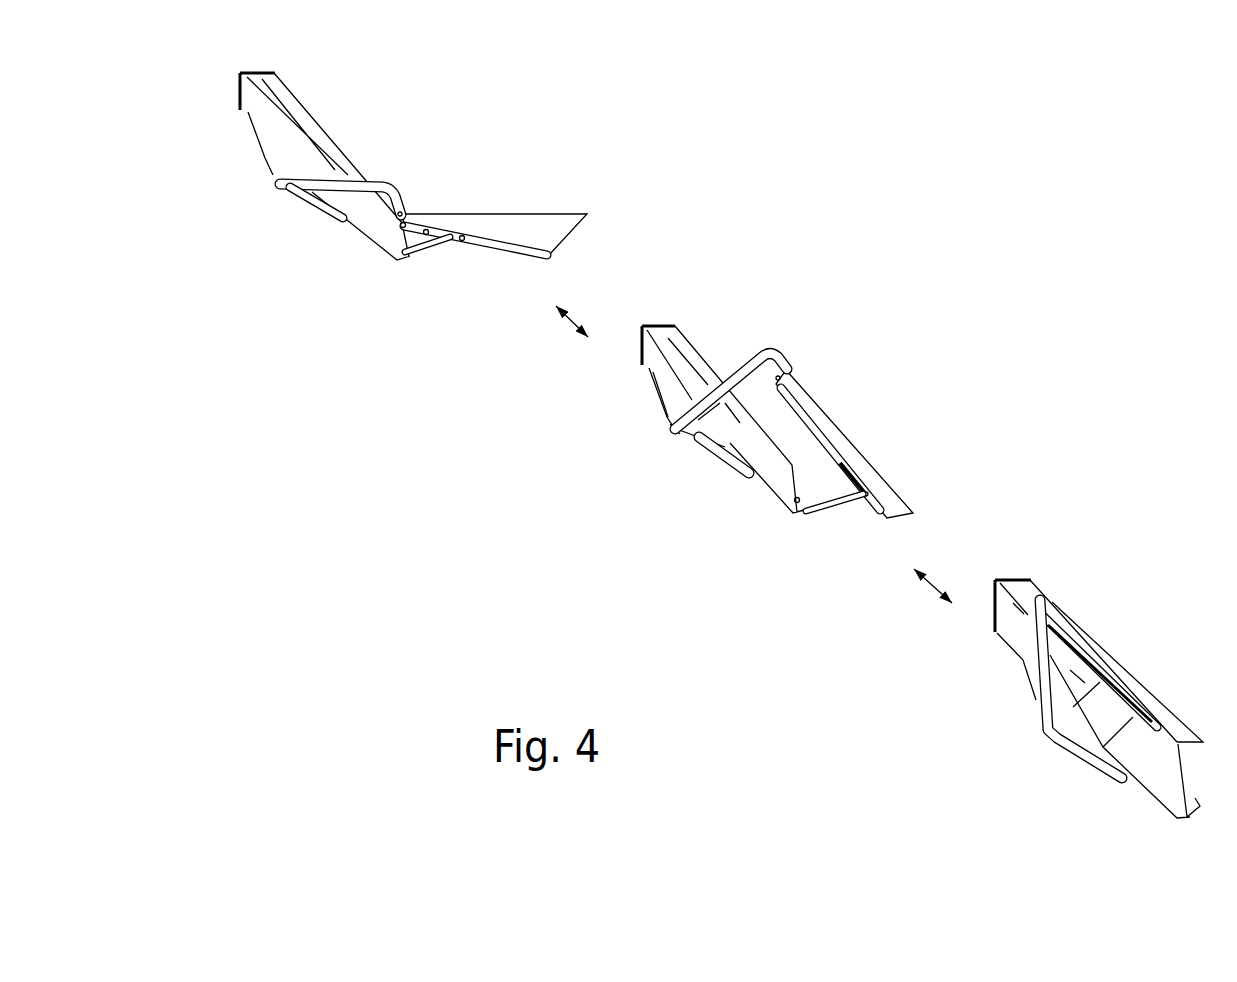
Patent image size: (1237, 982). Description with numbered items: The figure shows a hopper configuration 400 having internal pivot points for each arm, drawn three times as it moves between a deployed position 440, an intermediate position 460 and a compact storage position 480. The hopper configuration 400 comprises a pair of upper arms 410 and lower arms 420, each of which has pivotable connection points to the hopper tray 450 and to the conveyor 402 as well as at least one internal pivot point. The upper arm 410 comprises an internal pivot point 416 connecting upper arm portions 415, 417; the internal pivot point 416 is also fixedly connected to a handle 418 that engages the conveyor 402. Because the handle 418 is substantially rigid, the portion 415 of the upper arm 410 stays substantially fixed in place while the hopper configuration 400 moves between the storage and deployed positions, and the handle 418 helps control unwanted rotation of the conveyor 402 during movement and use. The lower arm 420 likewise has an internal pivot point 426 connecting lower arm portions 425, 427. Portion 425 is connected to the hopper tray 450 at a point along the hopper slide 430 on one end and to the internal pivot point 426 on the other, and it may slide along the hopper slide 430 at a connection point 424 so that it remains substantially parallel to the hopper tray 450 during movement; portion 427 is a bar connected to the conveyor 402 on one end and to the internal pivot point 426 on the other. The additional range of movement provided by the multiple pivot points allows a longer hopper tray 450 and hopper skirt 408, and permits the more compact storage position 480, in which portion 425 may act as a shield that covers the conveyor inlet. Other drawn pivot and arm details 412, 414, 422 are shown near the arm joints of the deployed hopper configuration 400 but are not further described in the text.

The hopper configuration 400 is at (540, 137).
The conveyor 402 is at (293, 107).
The hopper skirt 408 is at (525, 226).
The upper arm 410 is at (301, 197).
The lower arm 412 is at (342, 221).
The pivot joint 414 is at (403, 203).
The upper arm portion 415 is at (702, 447).
The internal pivot point 416 is at (672, 433).
The upper arm portion 417 is at (745, 366).
The handle 418 is at (649, 391).
The lower arm 420 is at (446, 240).
The pivot 422 is at (406, 259).
The connection point 424 is at (432, 222).
The lower arm portion 425 is at (836, 502).
The internal pivot point 426 is at (866, 490).
The lower arm portion 427 is at (860, 449).
The hopper slide 430 is at (1084, 652).
The deployed position 440 is at (291, 290).
The hopper tray 450 is at (513, 258).
The intermediate position 460 is at (738, 533).
The storage position 480 is at (1008, 679).